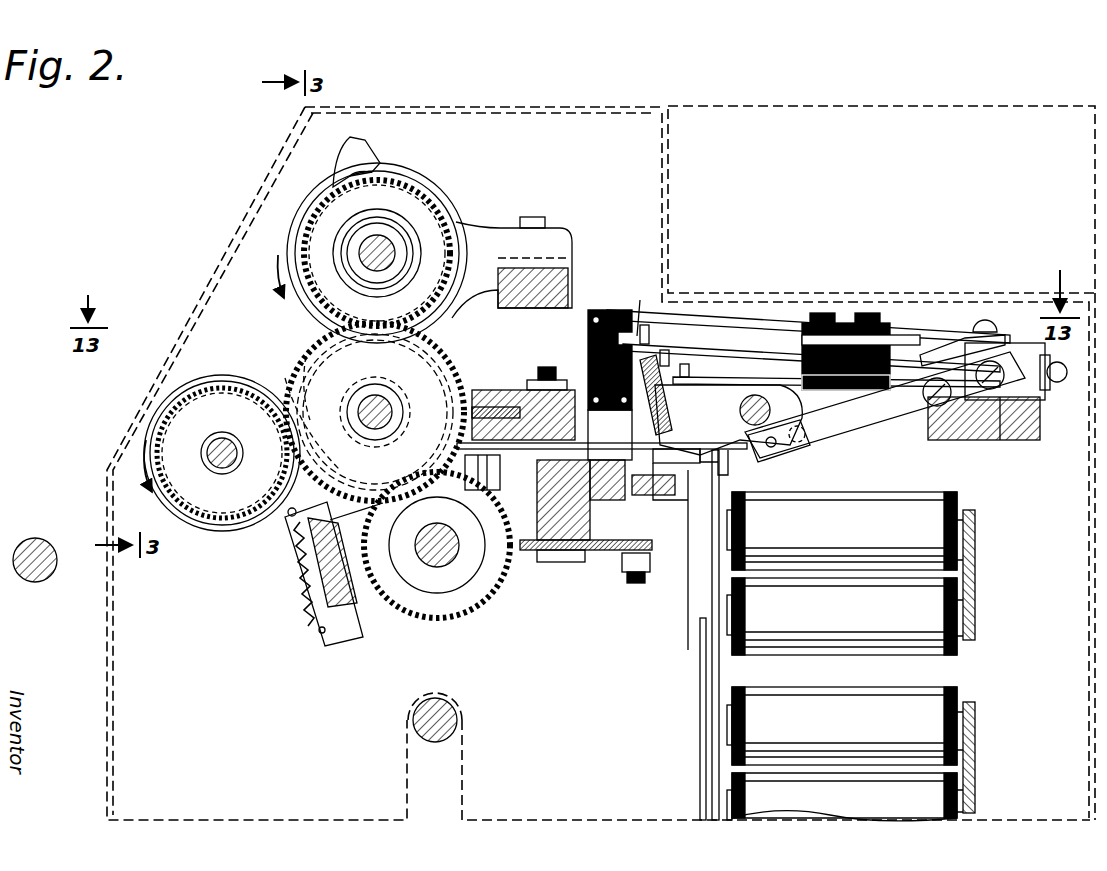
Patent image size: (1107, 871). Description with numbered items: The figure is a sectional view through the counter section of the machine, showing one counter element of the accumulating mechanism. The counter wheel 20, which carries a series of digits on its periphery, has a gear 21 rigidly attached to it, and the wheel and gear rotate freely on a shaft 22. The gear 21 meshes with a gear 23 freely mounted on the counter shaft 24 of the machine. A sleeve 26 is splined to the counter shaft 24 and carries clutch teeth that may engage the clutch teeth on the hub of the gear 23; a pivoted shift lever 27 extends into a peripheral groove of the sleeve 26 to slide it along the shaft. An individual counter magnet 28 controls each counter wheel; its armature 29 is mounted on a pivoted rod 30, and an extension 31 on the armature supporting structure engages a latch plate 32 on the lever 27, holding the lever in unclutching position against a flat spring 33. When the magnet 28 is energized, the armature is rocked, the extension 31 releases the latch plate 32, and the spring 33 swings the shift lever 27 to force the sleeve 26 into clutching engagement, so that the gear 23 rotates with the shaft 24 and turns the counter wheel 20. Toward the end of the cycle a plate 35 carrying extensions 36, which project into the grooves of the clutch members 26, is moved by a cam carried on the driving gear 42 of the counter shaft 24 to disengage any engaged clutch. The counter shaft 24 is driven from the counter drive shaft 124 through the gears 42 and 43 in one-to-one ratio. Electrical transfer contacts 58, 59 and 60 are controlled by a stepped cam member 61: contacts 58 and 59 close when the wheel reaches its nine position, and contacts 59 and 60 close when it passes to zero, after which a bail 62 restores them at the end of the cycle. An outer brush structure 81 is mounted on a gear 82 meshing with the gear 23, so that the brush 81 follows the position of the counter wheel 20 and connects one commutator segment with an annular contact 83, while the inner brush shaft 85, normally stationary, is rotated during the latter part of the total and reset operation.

The counter wheel 20 is at (246, 492).
The gear 21 is at (247, 522).
The shaft 22 is at (224, 472).
The gear 23 is at (434, 342).
The counter shaft 24 is at (388, 403).
The sleeve 26 is at (305, 355).
The shift lever 27 is at (582, 441).
The counter magnet 28 is at (853, 656).
The armature 29 is at (712, 566).
The pivoted rod 30 is at (704, 602).
The extension 31 is at (756, 450).
The latch plate 32 is at (722, 458).
The flat spring 33 is at (840, 428).
The plate 35 is at (467, 455).
The extensions 36 is at (472, 390).
The driving gear 42 is at (285, 378).
The gear 43 is at (430, 614).
The electrical transfer contact 58 is at (660, 318).
The electrical transfer contact 59 is at (680, 344).
The electrical transfer contact 60 is at (702, 377).
The stepped cam member 61 is at (592, 310).
The bail 62 is at (660, 370).
The outer brush structure 81 is at (362, 160).
The gear 82 is at (420, 198).
The annular contact 83 is at (458, 215).
The shaft 85 is at (370, 250).
The counter drive shaft 124 is at (452, 568).